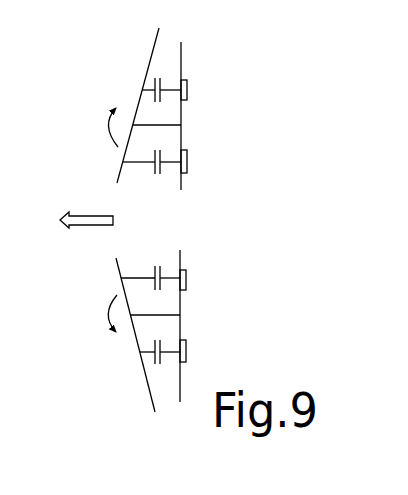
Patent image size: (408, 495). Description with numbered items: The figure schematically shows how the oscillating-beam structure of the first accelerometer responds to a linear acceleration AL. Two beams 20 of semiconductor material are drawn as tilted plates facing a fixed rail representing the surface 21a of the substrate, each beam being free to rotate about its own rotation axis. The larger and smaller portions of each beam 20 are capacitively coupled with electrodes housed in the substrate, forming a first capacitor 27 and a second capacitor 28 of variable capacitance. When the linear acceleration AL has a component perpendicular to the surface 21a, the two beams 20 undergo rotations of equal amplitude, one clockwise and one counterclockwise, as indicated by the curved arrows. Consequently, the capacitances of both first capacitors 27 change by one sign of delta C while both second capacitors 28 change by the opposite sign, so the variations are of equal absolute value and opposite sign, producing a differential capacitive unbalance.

The beam 20 is at (137, 102).
The surface of the substrate 21a is at (176, 66).
The first capacitor 27 is at (161, 172).
The second capacitor 28 is at (161, 100).
The linear acceleration AL is at (86, 207).